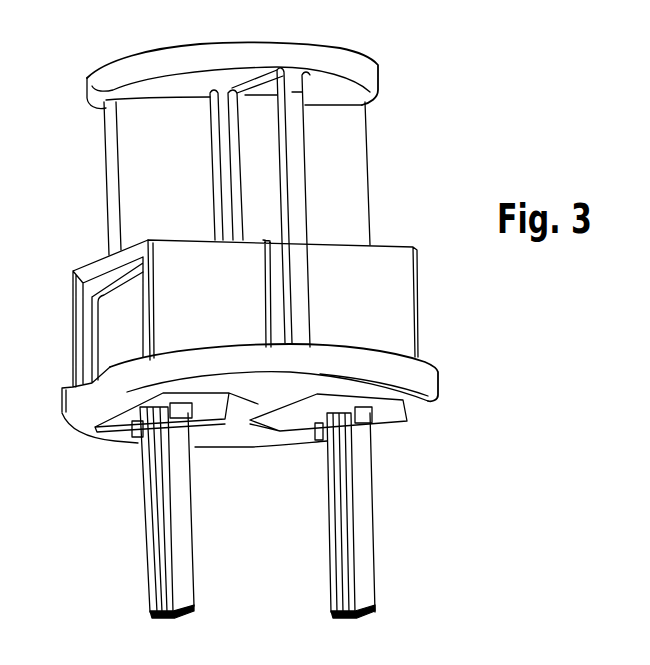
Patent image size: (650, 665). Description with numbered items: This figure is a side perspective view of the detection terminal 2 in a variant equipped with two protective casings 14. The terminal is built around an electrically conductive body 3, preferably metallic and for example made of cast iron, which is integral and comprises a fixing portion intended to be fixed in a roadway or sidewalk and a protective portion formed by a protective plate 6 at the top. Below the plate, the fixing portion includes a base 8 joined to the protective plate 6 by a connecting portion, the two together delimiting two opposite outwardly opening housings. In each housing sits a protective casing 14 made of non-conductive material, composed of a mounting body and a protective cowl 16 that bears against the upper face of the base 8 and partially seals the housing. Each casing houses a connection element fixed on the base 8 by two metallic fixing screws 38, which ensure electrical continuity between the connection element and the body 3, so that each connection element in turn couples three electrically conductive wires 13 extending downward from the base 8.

The detection terminal 2 is at (403, 161).
The electrically conductive body 3 is at (355, 224).
The protective plate 6 is at (343, 60).
The base 8 is at (430, 382).
The electrically conductive wires 13 is at (340, 533).
The protective casing 14 is at (123, 338).
The protective cowl 16 is at (100, 312).
The fixing screws 38 is at (180, 425).